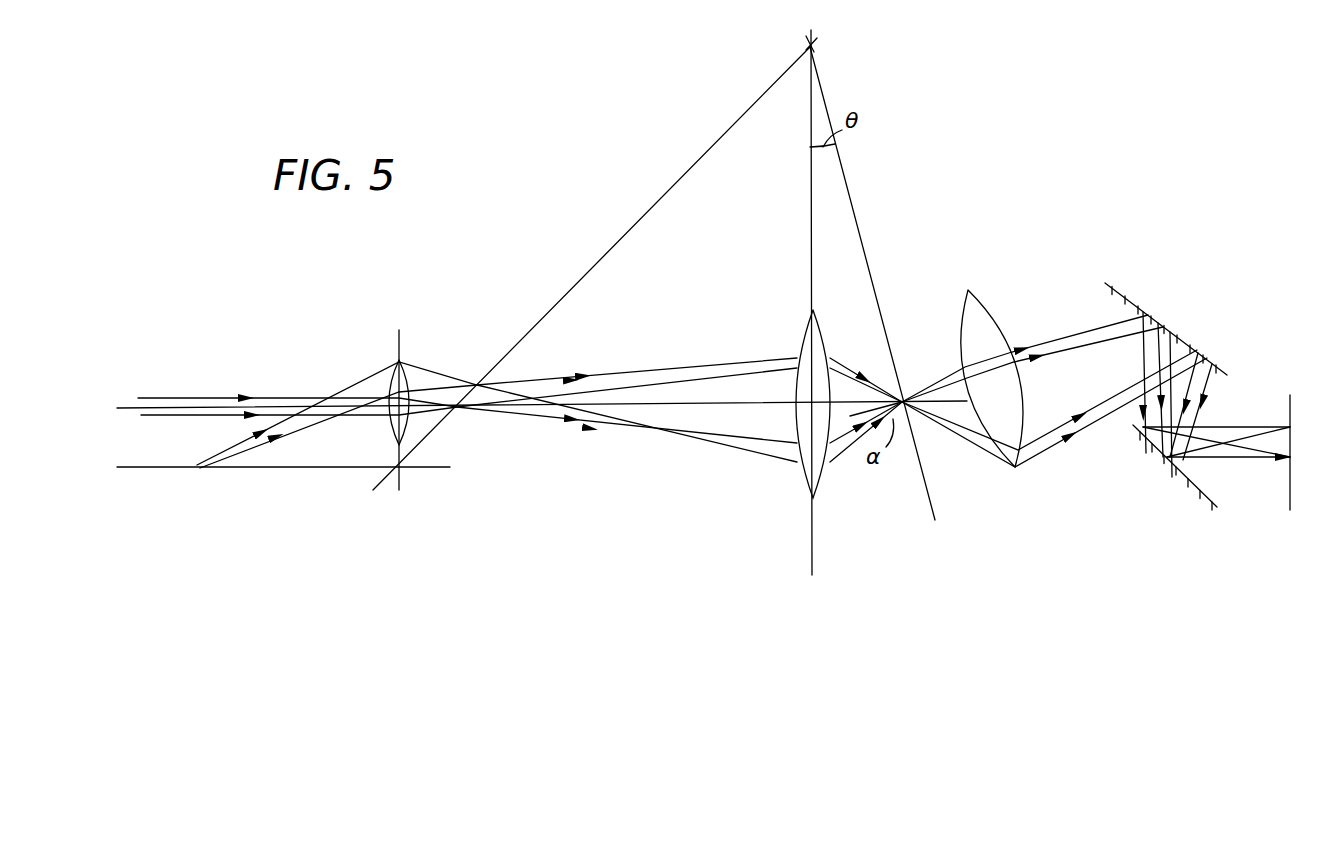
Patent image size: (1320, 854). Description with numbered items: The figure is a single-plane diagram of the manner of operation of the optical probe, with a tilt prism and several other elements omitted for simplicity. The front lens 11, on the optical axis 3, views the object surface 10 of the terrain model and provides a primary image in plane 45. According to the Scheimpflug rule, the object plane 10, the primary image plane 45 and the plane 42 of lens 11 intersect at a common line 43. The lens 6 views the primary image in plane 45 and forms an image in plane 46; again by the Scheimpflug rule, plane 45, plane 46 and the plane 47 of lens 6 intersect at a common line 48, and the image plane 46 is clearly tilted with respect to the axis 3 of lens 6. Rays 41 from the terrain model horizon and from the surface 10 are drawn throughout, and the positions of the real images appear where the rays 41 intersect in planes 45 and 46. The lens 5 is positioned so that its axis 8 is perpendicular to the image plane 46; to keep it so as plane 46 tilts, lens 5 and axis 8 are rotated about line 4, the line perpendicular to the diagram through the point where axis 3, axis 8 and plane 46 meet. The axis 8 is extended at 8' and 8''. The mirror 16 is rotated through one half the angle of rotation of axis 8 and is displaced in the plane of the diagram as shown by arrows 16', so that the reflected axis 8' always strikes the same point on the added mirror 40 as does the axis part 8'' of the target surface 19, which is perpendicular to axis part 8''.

The optical axis 3 is at (176, 397).
The line of rotation 4 is at (902, 399).
The lens 5 is at (983, 316).
The lens 6 is at (805, 342).
The optical axis 8 is at (1047, 384).
The reflected axis part 8' is at (1177, 385).
The axis part 8'' is at (1212, 434).
The object surface 10 is at (139, 469).
The front lens 11 is at (405, 380).
The mirror 16 is at (1166, 322).
The arrows of mirror displacement 16' is at (1242, 365).
The target surface 19 is at (1290, 510).
The mirror 40 is at (1163, 469).
The rays 41 is at (268, 412).
The plane of lens 42 is at (400, 336).
The common line 43 is at (401, 470).
The primary image plane 45 is at (601, 259).
The image plane 46 is at (858, 219).
The plane of lens 47 is at (809, 217).
The common line 48 is at (817, 48).